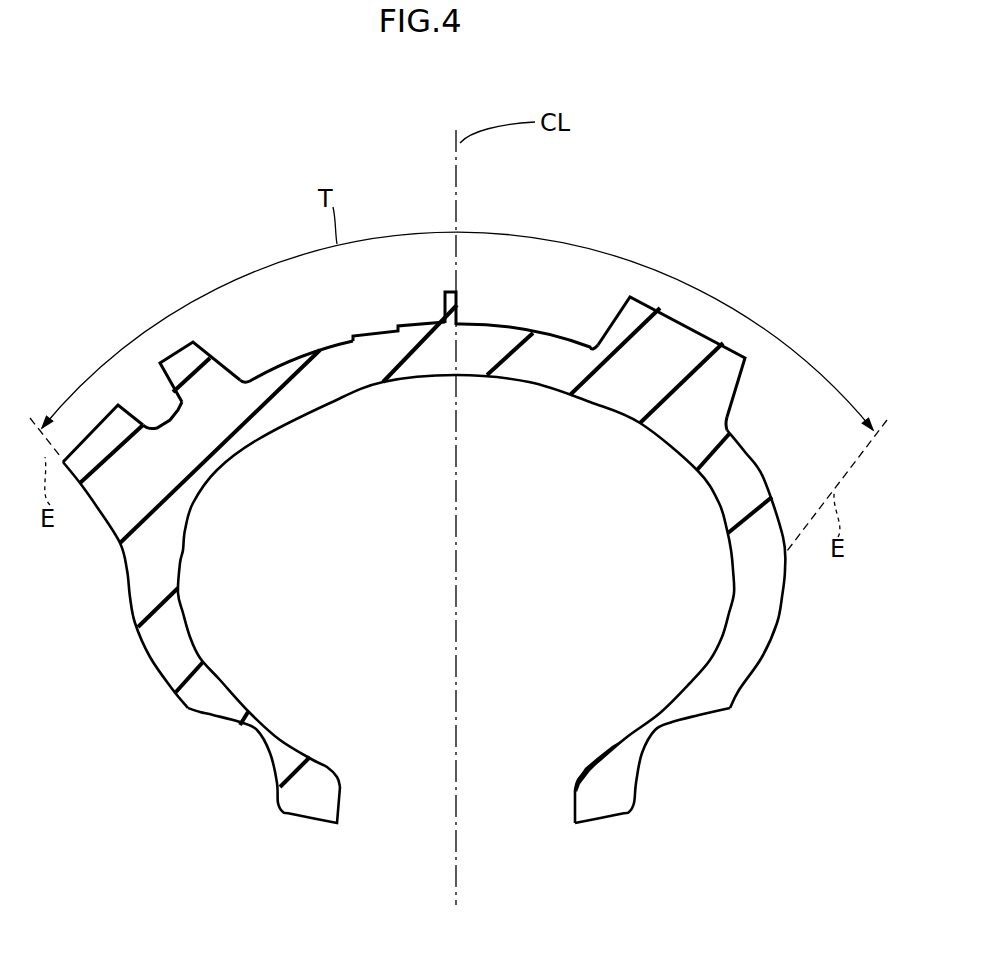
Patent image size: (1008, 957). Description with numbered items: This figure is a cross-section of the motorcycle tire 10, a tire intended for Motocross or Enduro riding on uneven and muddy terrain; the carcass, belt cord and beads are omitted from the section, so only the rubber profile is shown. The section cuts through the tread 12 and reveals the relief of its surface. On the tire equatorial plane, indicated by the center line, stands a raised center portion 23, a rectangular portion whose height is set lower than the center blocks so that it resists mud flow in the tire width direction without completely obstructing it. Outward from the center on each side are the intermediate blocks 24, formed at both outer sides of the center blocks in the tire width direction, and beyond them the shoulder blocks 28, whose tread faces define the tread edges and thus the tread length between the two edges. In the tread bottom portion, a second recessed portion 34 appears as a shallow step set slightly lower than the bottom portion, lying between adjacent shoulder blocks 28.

The motorcycle tire 10 is at (747, 157).
The tread 12 is at (721, 290).
The raised center portion 23 is at (445, 293).
The intermediate block 24 is at (177, 353).
The shoulder block 28 is at (77, 441).
The second recessed portion 34 is at (358, 334).